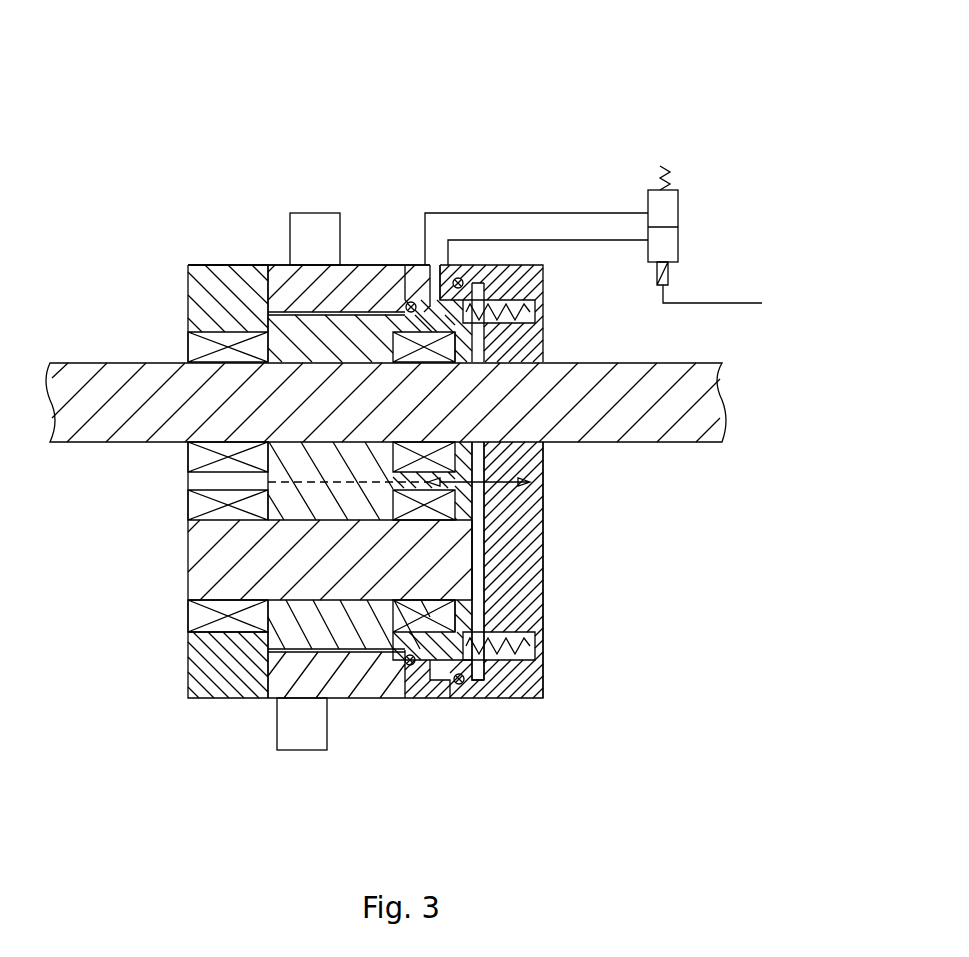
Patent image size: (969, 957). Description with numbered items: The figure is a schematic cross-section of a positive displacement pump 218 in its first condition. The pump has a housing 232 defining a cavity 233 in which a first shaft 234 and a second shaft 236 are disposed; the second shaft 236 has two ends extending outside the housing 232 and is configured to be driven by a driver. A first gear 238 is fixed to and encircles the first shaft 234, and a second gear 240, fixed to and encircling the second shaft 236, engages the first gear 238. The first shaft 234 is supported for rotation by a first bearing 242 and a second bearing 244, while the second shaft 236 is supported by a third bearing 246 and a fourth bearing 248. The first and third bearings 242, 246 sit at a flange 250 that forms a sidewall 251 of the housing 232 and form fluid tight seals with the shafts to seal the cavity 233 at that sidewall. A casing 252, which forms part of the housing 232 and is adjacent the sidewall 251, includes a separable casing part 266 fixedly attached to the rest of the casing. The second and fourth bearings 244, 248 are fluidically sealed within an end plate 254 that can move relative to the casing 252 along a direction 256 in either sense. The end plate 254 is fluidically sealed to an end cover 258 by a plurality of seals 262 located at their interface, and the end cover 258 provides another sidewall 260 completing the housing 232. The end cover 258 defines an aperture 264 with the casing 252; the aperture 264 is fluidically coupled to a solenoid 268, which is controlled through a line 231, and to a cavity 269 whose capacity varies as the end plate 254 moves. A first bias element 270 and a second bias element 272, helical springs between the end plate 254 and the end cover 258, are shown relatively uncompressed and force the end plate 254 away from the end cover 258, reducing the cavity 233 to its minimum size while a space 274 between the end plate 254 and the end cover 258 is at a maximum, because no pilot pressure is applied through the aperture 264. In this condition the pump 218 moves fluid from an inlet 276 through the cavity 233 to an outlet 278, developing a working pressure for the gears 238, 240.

The pump 218 is at (208, 107).
The line 231 is at (728, 303).
The housing 232 is at (207, 262).
The cavity 233 is at (392, 305).
The first shaft 234 is at (92, 387).
The second shaft 236 is at (210, 552).
The first gear 238 is at (275, 338).
The second gear 240 is at (320, 625).
The first bearing 242 is at (210, 455).
The second bearing 244 is at (450, 345).
The third bearing 246 is at (207, 607).
The fourth bearing 248 is at (448, 603).
The flange 250 is at (203, 297).
The sidewall 251 is at (187, 660).
The casing 252 is at (282, 282).
The end plate 254 is at (465, 502).
The direction 256 is at (495, 462).
The end cover 258 is at (510, 548).
The sidewall 260 is at (548, 578).
The seals 262 is at (409, 302).
The aperture 264 is at (447, 290).
The casing part 266 is at (433, 290).
The solenoid 268 is at (672, 212).
The cavity 269 is at (490, 300).
The first bias element 270 is at (540, 315).
The second bias element 272 is at (530, 648).
The space 274 is at (478, 673).
The inlet 276 is at (300, 742).
The outlet 278 is at (315, 220).